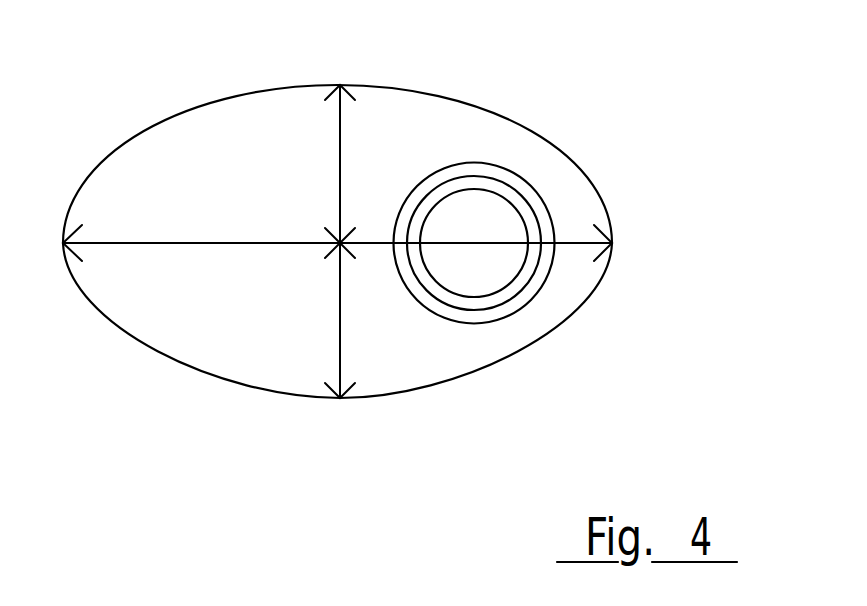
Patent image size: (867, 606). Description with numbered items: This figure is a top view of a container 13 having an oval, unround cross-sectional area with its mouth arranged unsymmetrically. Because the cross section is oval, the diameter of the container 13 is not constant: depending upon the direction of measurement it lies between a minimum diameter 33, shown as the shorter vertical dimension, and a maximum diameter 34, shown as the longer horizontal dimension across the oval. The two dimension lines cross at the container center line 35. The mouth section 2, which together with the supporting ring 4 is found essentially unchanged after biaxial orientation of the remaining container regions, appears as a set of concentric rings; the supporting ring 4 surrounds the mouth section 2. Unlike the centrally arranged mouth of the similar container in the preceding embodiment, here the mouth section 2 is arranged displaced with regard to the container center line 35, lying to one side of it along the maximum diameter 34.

The mouth section 2 is at (495, 302).
The supporting ring 4 is at (505, 177).
The container 13 is at (433, 92).
The minimum diameter 33 is at (337, 146).
The maximum diameter 34 is at (137, 250).
The container center line 35 is at (337, 252).